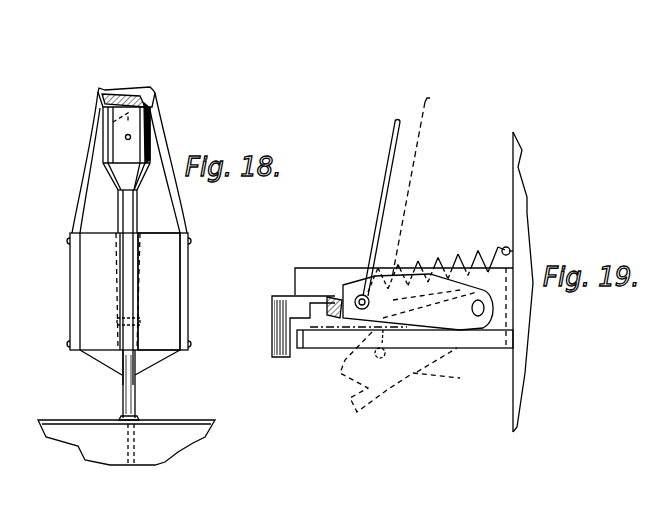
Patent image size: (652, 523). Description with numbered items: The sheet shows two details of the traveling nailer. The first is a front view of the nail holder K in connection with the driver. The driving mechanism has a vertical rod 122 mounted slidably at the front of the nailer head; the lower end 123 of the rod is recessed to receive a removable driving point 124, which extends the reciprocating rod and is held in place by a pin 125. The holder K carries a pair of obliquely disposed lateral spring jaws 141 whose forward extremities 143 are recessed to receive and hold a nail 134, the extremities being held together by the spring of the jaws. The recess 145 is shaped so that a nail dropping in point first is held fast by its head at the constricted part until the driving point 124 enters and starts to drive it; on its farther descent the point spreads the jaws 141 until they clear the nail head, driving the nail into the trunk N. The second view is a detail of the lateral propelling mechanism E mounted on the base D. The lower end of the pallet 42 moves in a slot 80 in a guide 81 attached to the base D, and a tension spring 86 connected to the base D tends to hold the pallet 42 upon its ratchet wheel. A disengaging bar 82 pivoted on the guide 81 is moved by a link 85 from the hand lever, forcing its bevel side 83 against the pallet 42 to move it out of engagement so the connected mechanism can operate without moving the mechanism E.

In FIG. 18, the vertical rod 122 is at (118, 97).
In FIG. 18, the lower end of the rod 123 is at (153, 147).
In FIG. 18, the pin 125 is at (125, 137).
In FIG. 18, the spring jaws 141 is at (188, 270).
In FIG. 18, the forward extremities of the jaws 143 is at (167, 297).
In FIG. 18, the recess of the jaws 145 is at (140, 334).
In FIG. 18, the driving point 124 is at (133, 383).
In FIG. 18, the nail 134 is at (137, 417).
In FIG. 18, the nail holder K is at (184, 213).
In FIG. 18, the trunk N is at (34, 452).
In FIG. 19, the slot 80 is at (303, 350).
In FIG. 19, the guide 81 is at (332, 342).
In FIG. 19, the disengaging bar 82 is at (460, 330).
In FIG. 19, the bevel side 83 is at (342, 285).
In FIG. 19, the link 85 is at (385, 207).
In FIG. 19, the tension spring 86 is at (475, 247).
In FIG. 19, the pallet 42 is at (287, 297).
In FIG. 19, the base D is at (535, 282).
In FIG. 19, the lateral propelling mechanism E is at (411, 170).